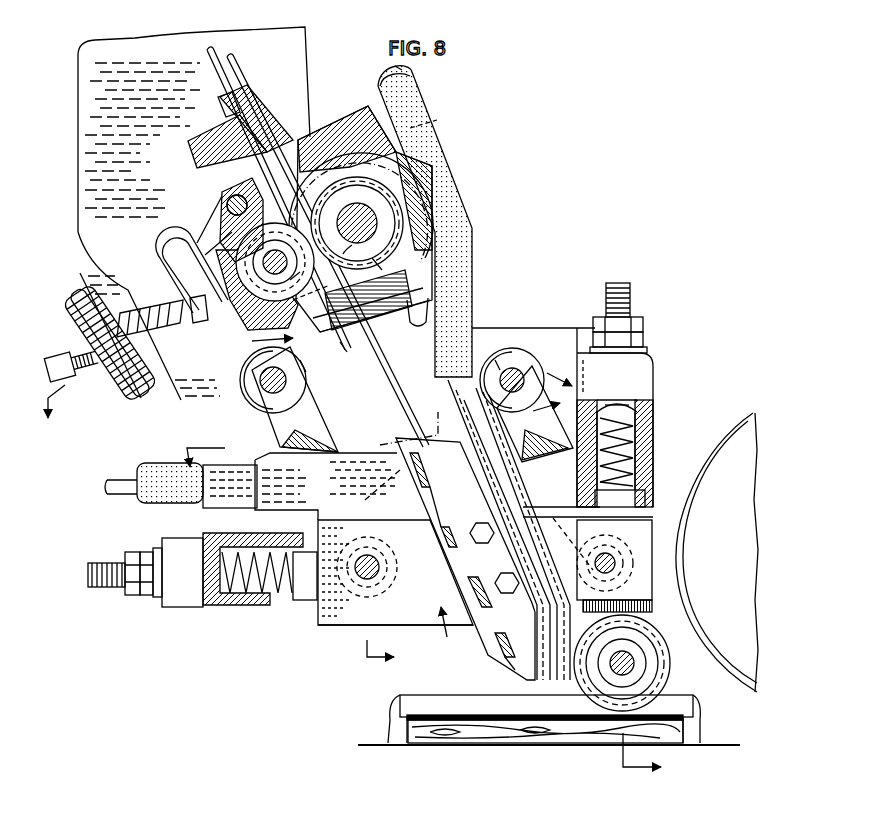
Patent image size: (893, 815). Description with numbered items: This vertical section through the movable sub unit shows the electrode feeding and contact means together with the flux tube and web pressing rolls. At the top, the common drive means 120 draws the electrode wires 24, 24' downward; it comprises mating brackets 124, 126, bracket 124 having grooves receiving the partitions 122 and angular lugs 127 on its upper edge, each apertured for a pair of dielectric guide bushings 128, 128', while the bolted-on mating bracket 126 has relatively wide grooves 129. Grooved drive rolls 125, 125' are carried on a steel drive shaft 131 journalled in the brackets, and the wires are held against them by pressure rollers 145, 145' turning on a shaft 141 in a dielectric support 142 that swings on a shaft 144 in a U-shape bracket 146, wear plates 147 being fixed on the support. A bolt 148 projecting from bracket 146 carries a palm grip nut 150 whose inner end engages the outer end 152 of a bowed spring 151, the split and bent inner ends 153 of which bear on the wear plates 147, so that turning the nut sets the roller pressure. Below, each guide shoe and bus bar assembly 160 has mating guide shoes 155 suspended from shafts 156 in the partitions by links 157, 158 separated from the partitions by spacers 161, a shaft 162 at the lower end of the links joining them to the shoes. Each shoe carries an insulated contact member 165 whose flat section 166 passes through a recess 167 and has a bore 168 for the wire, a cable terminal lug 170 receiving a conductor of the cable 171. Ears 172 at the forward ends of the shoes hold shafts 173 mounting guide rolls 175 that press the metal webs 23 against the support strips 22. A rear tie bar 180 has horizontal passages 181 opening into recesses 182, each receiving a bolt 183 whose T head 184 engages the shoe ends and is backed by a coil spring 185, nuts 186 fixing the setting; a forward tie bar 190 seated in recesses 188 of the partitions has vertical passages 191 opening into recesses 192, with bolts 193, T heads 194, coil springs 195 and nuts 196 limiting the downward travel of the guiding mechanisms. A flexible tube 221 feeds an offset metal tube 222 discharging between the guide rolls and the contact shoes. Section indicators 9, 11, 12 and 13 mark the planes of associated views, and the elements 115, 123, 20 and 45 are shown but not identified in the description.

The partitions 122 is at (190, 33).
The electrode wire 24 is at (328, 241).
The electrode wire 24' is at (251, 197).
The dielectric guide bushing 128 is at (256, 105).
The dielectric guide bushing 128' is at (206, 105).
The angular lugs 127 is at (193, 140).
The common drive means 120 is at (318, 130).
The mating bracket 126 is at (336, 130).
The flexible tubes 221 is at (414, 73).
The tube 115 is at (452, 96).
The grooved drive roll 125' is at (441, 117).
The grooved drive roll 125 is at (361, 211).
The steel drive shaft 131 is at (348, 257).
The pressure roller 145 is at (365, 273).
The U-shape bracket 146 is at (216, 322).
The shaft 141 is at (272, 256).
The pressure roller 145' is at (281, 286).
The shaft 144 is at (222, 196).
The wear plates 147 is at (201, 225).
The bowed spring 151 is at (162, 252).
The outer end of spring 152 is at (165, 310).
The split and bent inner ends 153 is at (207, 316).
The palm grip nut 150 is at (88, 292).
The bolt 148 is at (68, 355).
The section line 9- 9 is at (51, 411).
The bracket 124 is at (378, 328).
The grooves 129 is at (419, 318).
The rod end 123 is at (345, 353).
The shafts 156 is at (262, 377).
The dielectric support 142 is at (308, 380).
The links 158 is at (307, 412).
The spacers 161 is at (505, 355).
The links 157 is at (530, 440).
The section line 13- 13 is at (370, 410).
The section line 12- 12 is at (588, 598).
The section line 11- 11 is at (335, 501).
The tie bar 190 is at (655, 366).
The recesses 188 is at (585, 382).
The vertical passages 191 is at (616, 393).
The enlarged recesses 192 is at (655, 428).
The coil springs 195 is at (642, 472).
The T heads 194 is at (646, 498).
The nuts 196 is at (645, 340).
The bolts 193 is at (618, 283).
The cable terminal lug 170 is at (352, 465).
The bore 168 is at (427, 432).
The contact member 165 is at (450, 475).
The offset metal tubes 222 is at (500, 481).
The flat section 166 is at (470, 550).
The recess 167 is at (473, 640).
The guide shoes 155 is at (439, 631).
The T head 184 is at (362, 580).
The guide shoe and bus bar assembly 160 is at (318, 630).
The shaft 162 is at (378, 568).
The cable 171 is at (117, 485).
The tie bar 180 is at (170, 600).
The nuts 186 is at (145, 552).
The bolt 183 is at (95, 585).
The horizontal passages 181 is at (210, 598).
The enlarged recesses 182 is at (258, 602).
The coil spring 185 is at (286, 602).
The ears 172 is at (645, 632).
The shafts 173 is at (635, 665).
The guide rolls 175 is at (655, 680).
The plate 20 is at (413, 700).
The metal webs 23 is at (668, 710).
The support strips 22 is at (537, 736).
The blade guard 45 is at (742, 450).